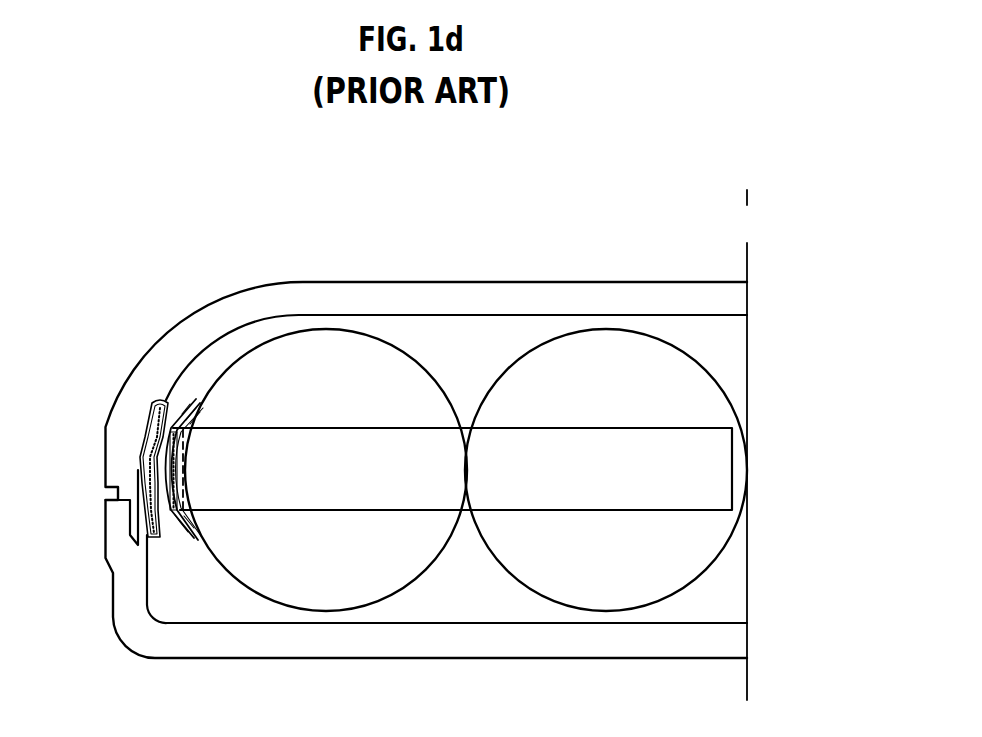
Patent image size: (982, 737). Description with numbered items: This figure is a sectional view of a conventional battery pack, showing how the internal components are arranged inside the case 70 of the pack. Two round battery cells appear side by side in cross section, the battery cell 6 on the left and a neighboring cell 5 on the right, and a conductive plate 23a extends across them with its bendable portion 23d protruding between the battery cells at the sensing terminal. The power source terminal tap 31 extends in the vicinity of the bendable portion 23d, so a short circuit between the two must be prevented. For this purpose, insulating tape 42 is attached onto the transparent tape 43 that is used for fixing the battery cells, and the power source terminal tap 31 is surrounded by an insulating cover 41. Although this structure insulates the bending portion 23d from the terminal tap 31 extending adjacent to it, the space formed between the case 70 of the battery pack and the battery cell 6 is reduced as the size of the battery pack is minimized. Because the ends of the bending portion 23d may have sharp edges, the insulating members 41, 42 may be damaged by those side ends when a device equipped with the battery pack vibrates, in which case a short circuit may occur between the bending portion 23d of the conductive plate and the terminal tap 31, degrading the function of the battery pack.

The case 70 is at (733, 305).
The battery cell 6 is at (326, 470).
The first cylindrical cell 5 is at (606, 470).
The circuit board 23a is at (390, 442).
The bendable portion 23d is at (193, 448).
The insulating cover 41 is at (147, 426).
The insulating tape 42 is at (170, 398).
The transparent tape 43 is at (188, 410).
The power source terminal tap 31 is at (140, 462).